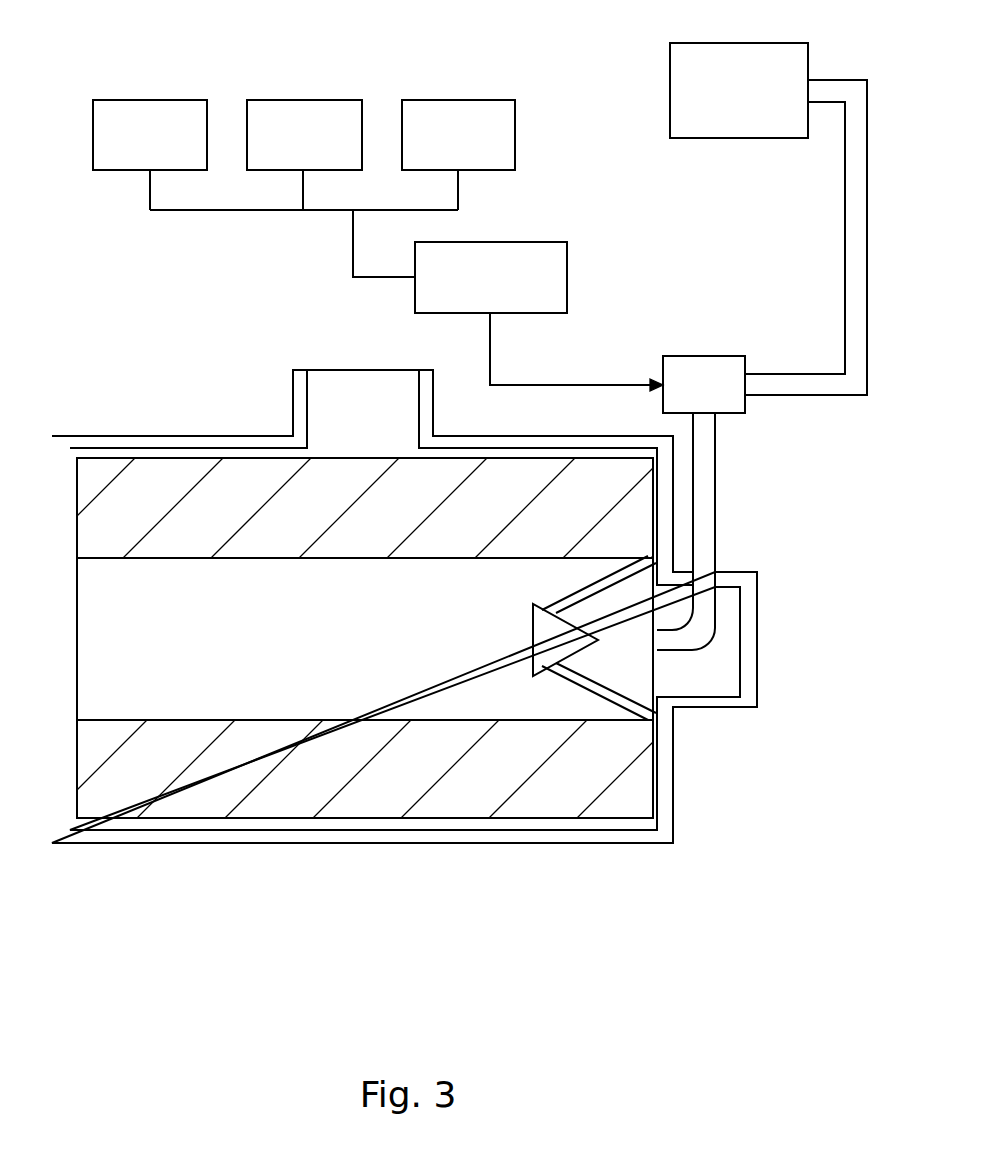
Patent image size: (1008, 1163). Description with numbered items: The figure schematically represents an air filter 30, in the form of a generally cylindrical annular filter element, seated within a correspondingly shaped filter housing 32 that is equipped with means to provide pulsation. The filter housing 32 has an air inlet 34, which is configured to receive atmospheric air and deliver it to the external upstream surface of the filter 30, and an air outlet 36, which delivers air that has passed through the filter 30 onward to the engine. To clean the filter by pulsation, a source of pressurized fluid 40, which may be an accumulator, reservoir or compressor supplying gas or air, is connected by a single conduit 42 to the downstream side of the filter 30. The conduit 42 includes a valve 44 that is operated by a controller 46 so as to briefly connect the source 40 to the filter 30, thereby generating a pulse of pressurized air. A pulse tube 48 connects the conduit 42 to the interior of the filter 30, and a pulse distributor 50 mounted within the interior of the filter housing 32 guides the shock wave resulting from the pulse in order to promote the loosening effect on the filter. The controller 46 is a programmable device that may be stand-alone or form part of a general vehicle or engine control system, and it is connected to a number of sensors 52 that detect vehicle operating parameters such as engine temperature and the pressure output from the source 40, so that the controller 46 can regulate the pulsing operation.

The air filter 30 is at (207, 783).
The filter housing 32 is at (378, 838).
The air inlet 34 is at (337, 395).
The air outlet 36 is at (727, 643).
The source of pressurized fluid 40 is at (707, 125).
The conduit 42 is at (845, 260).
The valve 44 is at (703, 362).
The controller 46 is at (531, 258).
The pulse tube 48 is at (705, 516).
The pulse distributor 50 is at (553, 645).
The sensors 52 is at (138, 120).